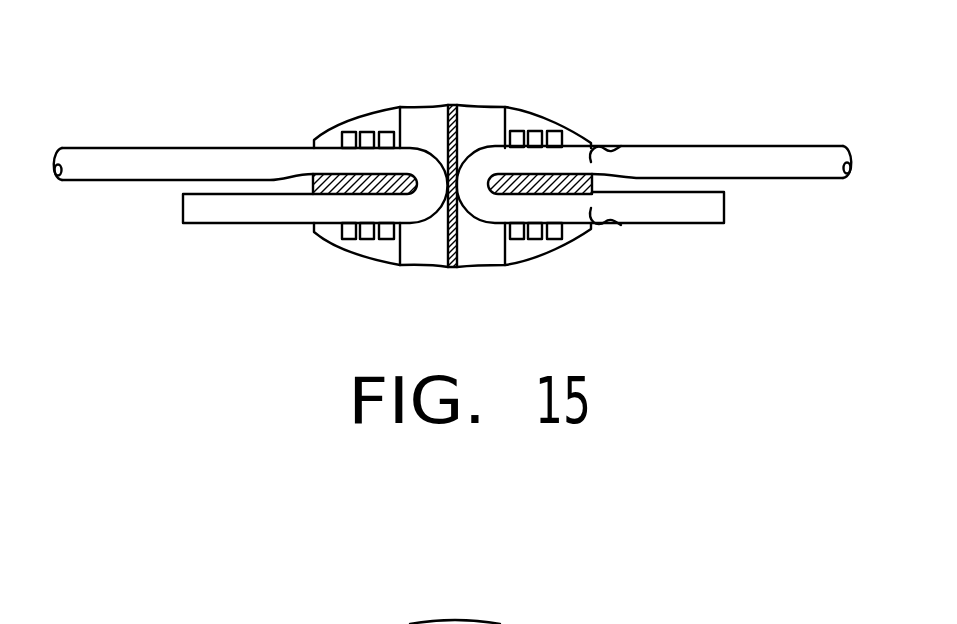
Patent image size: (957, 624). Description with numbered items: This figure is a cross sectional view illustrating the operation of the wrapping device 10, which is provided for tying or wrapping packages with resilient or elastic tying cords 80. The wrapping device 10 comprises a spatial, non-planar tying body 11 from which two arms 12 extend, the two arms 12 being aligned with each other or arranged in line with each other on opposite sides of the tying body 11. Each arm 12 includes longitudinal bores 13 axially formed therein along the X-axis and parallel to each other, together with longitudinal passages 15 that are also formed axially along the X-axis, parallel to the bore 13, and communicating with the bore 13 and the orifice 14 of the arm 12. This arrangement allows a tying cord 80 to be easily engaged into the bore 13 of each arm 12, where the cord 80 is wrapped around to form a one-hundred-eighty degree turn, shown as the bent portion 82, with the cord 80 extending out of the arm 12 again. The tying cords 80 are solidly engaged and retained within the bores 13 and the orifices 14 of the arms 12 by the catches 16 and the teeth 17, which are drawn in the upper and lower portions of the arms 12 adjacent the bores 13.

The wrapping device 10 is at (521, 95).
The tying body 11 is at (452, 102).
The arms 12 is at (340, 119).
The longitudinal bores 13 is at (602, 147).
The orifice 14 is at (413, 120).
The longitudinal passage 15 is at (380, 250).
The catches 16 is at (327, 234).
The teeth 17 is at (538, 241).
The tying cord 80 is at (793, 152).
The bent portion 82 is at (480, 192).